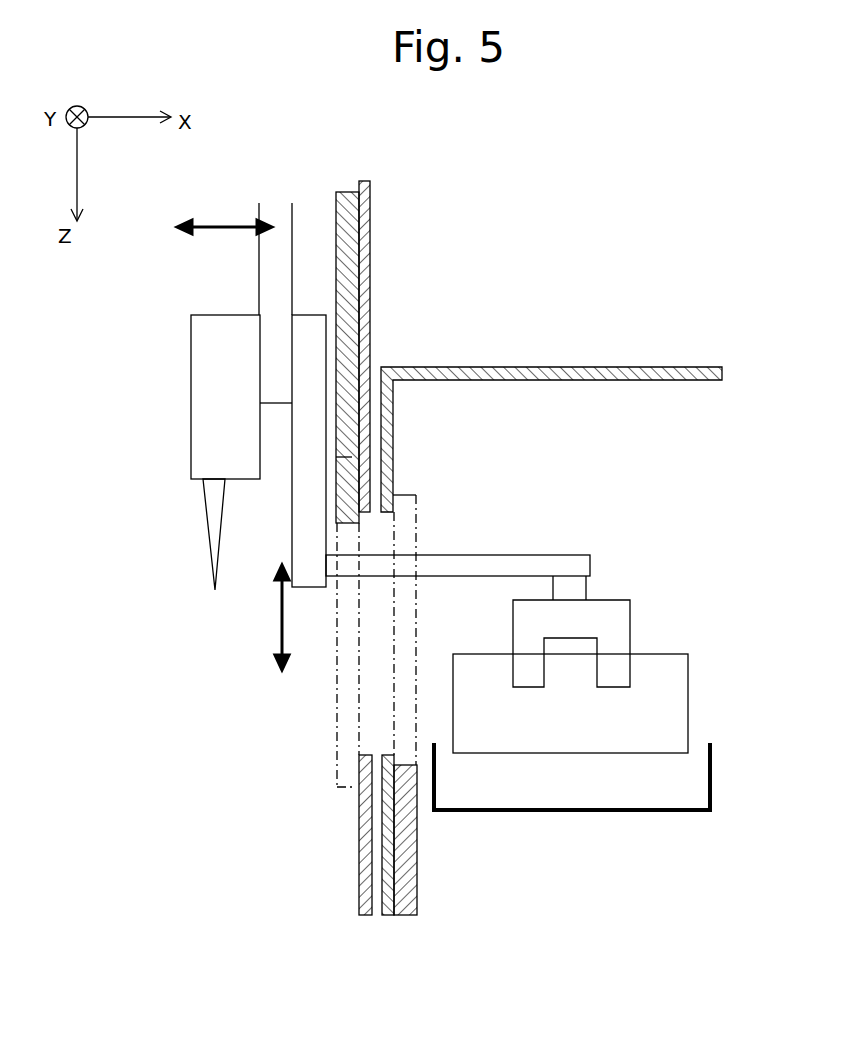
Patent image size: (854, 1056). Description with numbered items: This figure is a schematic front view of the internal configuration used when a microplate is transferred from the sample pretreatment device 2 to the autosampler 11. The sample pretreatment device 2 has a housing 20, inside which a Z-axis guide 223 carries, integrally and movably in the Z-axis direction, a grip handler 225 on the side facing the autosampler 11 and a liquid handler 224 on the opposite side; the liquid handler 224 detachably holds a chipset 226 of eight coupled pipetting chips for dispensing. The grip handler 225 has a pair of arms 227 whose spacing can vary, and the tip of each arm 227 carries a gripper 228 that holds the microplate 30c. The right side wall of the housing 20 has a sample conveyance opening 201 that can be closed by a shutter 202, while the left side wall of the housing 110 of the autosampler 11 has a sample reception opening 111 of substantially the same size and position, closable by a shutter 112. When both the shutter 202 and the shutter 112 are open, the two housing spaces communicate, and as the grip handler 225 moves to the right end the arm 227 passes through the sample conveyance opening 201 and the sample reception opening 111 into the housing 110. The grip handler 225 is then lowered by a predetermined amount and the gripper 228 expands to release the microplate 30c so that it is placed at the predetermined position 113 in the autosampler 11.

The sample pretreatment device 2 is at (466, 224).
The autosampler 11 is at (638, 288).
The housing 20 is at (362, 262).
The microplate 30c is at (680, 691).
The housing 110 is at (632, 367).
The sample reception opening 111 is at (396, 516).
The shutter 112 is at (416, 836).
The predetermined position 113 is at (688, 813).
The sample conveyance opening 201 is at (361, 741).
The shutter 202 is at (358, 212).
The Z-axis guide 223 is at (259, 287).
The liquid handler 224 is at (191, 352).
The grip handler 225 is at (328, 360).
The chipset 226 is at (208, 532).
The arm 227 is at (502, 554).
The gripper 228 is at (625, 615).